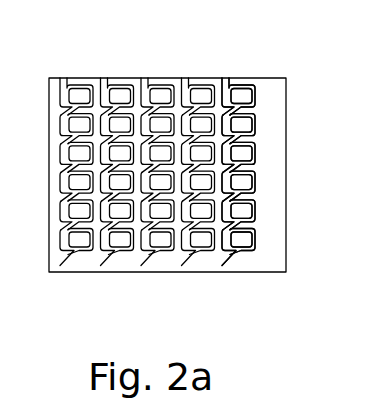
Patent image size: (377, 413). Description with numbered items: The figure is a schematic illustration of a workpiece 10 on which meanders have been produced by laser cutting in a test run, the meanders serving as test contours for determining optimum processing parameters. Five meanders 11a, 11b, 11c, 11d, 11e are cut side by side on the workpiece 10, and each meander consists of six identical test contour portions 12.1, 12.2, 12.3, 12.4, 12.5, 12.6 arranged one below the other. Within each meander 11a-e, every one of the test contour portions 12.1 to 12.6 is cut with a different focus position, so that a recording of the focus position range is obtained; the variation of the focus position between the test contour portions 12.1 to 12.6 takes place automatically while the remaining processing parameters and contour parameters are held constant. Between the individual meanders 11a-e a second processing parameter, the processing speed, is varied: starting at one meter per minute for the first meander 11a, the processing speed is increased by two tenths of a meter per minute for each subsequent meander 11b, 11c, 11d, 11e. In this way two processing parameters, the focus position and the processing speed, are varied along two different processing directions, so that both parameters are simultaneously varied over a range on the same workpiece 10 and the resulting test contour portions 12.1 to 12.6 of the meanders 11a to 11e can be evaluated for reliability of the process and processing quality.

The workpiece 10 is at (263, 82).
The meander 11a is at (230, 254).
The meander 11b is at (190, 254).
The meander 11c is at (149, 254).
The meander 11d is at (108, 254).
The meander 11e is at (68, 254).
The test contour portion 12.1 is at (257, 239).
The test contour portion 12.2 is at (257, 209).
The test contour portion 12.3 is at (257, 180).
The test contour portion 12.4 is at (257, 152).
The test contour portion 12.5 is at (257, 122).
The test contour portion 12.6 is at (257, 92).